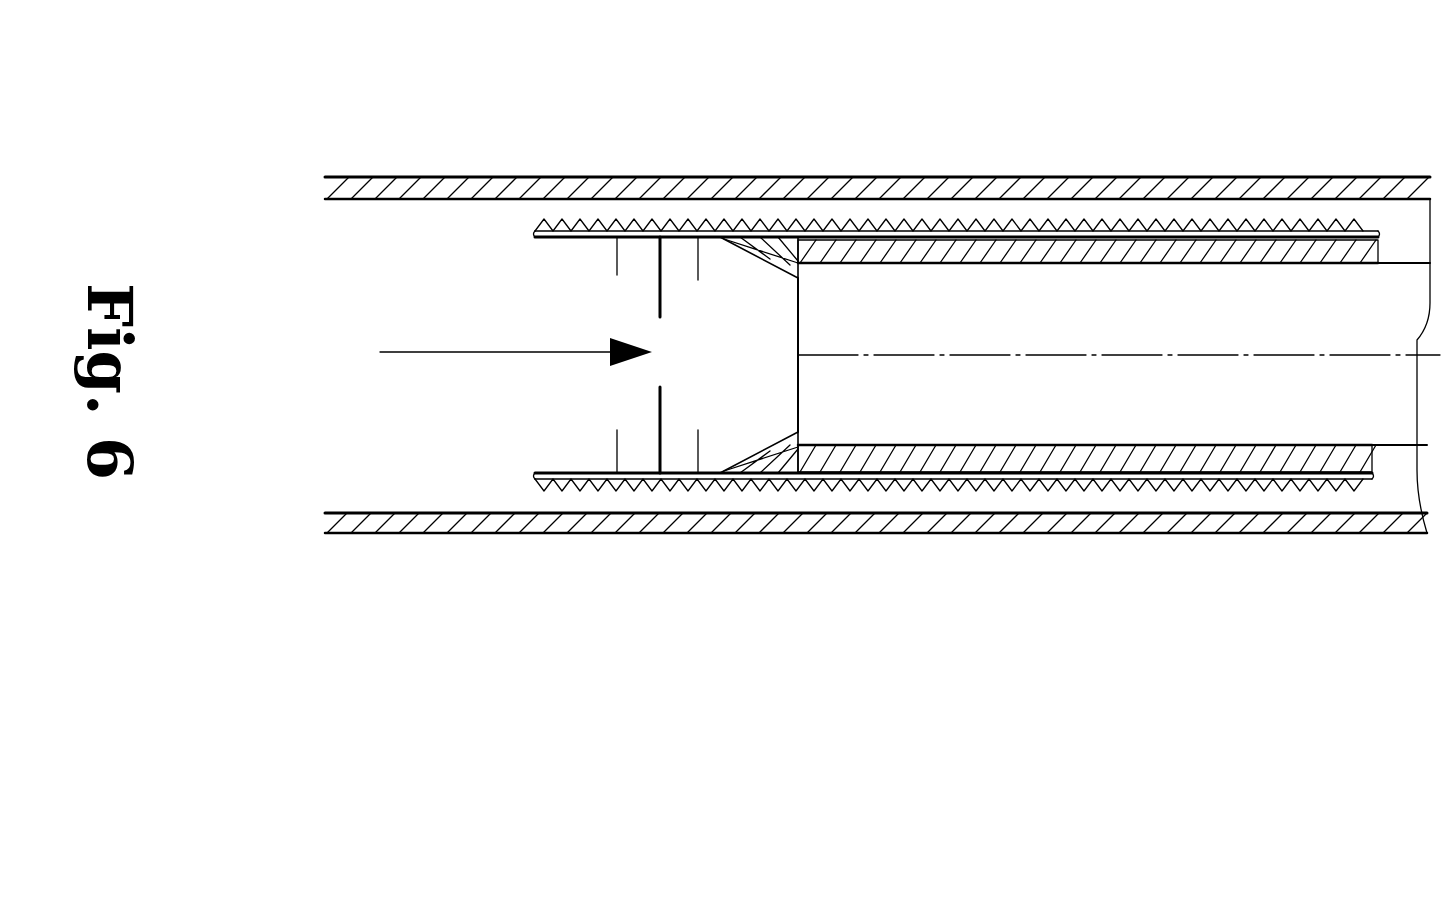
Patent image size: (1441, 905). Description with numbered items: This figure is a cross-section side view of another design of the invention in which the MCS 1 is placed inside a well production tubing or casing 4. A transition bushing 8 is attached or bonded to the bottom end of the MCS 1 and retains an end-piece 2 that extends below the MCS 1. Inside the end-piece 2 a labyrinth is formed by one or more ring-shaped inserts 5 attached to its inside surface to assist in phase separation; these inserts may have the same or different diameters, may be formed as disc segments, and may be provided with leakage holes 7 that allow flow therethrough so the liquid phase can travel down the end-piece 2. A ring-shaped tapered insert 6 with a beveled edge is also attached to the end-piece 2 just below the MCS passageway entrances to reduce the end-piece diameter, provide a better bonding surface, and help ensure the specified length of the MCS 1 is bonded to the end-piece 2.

The MCS 1 is at (1119, 297).
The end-piece 2 is at (957, 276).
The well production tubing or casing 4 is at (877, 291).
The ring-shaped insert 5 is at (730, 261).
The ring-shaped tapered insert 6 is at (815, 261).
The leakage holes 7 is at (1022, 623).
The transition bushing 8 is at (933, 349).